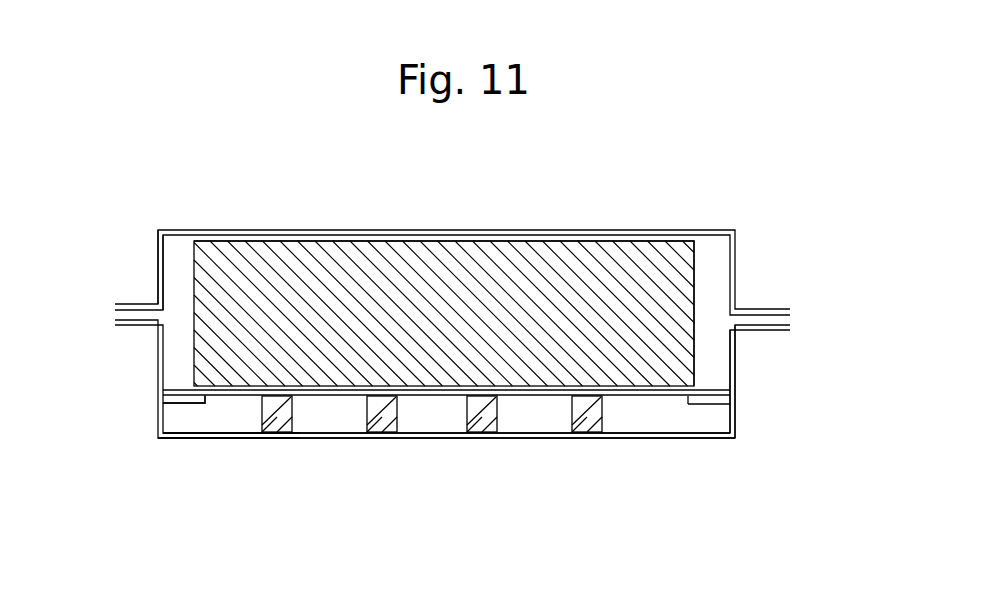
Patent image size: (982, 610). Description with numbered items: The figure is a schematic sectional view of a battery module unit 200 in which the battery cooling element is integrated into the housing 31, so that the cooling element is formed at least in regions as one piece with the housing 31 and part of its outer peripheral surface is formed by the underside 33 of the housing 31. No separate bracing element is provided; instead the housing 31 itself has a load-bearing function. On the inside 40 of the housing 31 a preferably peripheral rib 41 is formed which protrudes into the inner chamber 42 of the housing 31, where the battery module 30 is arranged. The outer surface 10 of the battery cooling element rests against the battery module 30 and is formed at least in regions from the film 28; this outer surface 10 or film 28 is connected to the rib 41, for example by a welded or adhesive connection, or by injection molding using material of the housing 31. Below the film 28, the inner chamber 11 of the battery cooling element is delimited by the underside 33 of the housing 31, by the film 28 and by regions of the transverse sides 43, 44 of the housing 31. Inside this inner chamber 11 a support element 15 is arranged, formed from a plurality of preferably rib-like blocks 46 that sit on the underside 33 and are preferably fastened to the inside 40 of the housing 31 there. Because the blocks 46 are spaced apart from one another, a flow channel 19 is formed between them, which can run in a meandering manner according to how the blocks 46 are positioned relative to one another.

The cooling assembly 200 is at (180, 187).
The battery module 30 is at (448, 262).
The outer surface 10 is at (533, 385).
The film 28 is at (630, 392).
The support element 15 is at (616, 412).
The transverse side 44 is at (735, 373).
The inner chamber 42 is at (172, 342).
The transverse side 43 is at (183, 398).
The rib 41 is at (180, 424).
The inside 40 is at (178, 438).
The underside 33 is at (230, 438).
The flow channel 19 is at (245, 412).
The inner chamber 11 is at (333, 415).
The blocks 46 is at (485, 418).
The housing 31 is at (745, 443).